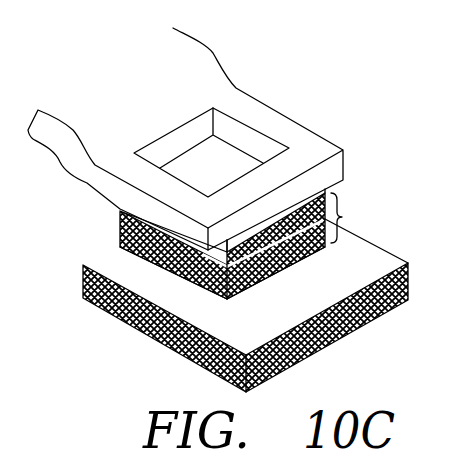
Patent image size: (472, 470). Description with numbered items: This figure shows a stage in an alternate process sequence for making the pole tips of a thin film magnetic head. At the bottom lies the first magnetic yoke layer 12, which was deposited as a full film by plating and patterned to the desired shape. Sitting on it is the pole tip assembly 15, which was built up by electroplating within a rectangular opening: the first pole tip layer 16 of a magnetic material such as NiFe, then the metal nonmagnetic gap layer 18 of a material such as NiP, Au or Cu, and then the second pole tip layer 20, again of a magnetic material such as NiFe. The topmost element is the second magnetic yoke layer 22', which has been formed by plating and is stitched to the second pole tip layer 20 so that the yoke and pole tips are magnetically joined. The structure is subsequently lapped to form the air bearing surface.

The first magnetic yoke layer 12 is at (409, 275).
The pole tip assembly 15 is at (353, 218).
The first pole tip layer 16 is at (224, 300).
The metal nonmagnetic gap layer 18 is at (302, 256).
The second pole tip layer 20 is at (322, 190).
The second magnetic yoke layer 22' is at (192, 139).